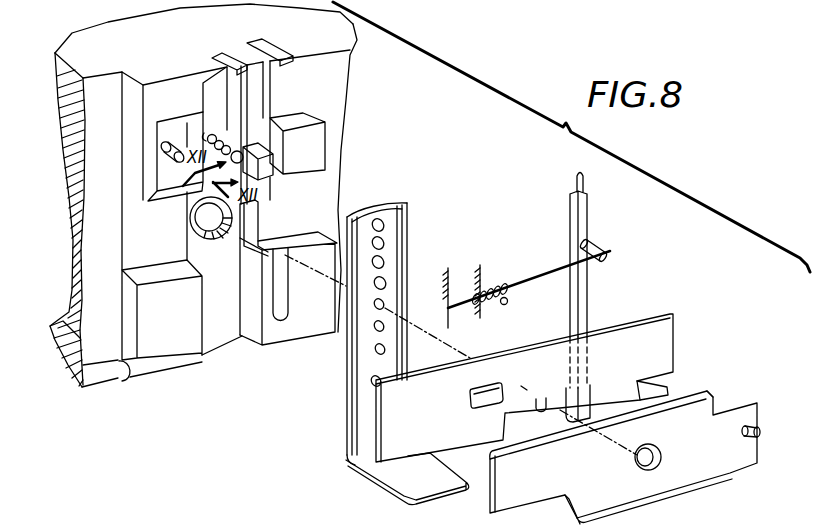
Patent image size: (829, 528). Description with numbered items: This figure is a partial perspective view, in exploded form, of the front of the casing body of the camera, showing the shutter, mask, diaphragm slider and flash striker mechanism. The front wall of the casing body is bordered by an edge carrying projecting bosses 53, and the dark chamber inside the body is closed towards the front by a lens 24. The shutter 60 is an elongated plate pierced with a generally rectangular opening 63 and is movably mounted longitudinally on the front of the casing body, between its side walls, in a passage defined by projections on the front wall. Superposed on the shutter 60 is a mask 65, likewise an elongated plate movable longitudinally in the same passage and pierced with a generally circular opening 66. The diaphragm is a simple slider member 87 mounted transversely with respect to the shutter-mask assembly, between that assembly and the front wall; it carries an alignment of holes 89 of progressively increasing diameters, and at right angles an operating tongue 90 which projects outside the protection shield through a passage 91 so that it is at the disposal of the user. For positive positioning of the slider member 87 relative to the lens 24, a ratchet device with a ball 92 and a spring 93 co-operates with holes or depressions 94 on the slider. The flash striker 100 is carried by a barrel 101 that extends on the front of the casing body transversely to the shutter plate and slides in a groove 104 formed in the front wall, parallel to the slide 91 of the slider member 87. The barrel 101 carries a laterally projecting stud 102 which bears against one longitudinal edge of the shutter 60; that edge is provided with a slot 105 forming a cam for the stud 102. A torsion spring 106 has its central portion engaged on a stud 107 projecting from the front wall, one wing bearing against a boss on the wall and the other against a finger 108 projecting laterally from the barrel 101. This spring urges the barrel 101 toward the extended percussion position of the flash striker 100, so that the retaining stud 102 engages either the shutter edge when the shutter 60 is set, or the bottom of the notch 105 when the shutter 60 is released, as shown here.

The lens 24 is at (216, 241).
The projecting boss 53 is at (127, 383).
The shutter 60 is at (524, 393).
The opening 63 is at (482, 406).
The mask 65 is at (625, 457).
The opening 66 is at (660, 458).
The slider member 87 is at (385, 360).
The holes 89 is at (372, 381).
The operating tongue 90 is at (407, 482).
The passage 91 is at (253, 335).
The ball 92 is at (244, 152).
The spring 93 is at (221, 139).
The holes or depressions 94 is at (385, 282).
The flash striker 100 is at (576, 184).
The barrel 101 is at (587, 274).
The projecting stud 102 is at (637, 384).
The groove 104 is at (263, 216).
The slot 105 is at (541, 398).
The torsion spring 106 is at (526, 272).
The stud 107 is at (500, 292).
The finger 108 is at (606, 247).